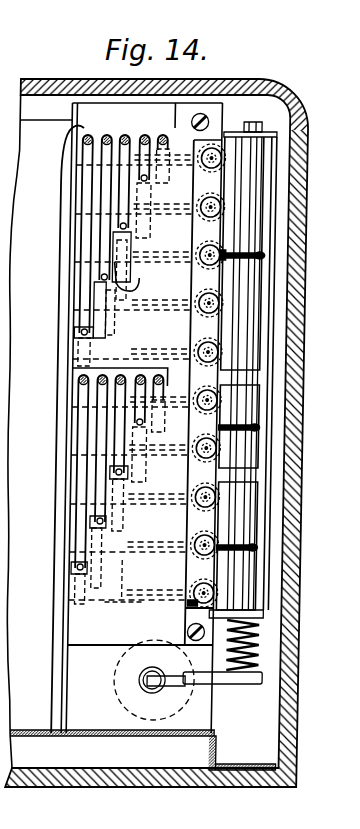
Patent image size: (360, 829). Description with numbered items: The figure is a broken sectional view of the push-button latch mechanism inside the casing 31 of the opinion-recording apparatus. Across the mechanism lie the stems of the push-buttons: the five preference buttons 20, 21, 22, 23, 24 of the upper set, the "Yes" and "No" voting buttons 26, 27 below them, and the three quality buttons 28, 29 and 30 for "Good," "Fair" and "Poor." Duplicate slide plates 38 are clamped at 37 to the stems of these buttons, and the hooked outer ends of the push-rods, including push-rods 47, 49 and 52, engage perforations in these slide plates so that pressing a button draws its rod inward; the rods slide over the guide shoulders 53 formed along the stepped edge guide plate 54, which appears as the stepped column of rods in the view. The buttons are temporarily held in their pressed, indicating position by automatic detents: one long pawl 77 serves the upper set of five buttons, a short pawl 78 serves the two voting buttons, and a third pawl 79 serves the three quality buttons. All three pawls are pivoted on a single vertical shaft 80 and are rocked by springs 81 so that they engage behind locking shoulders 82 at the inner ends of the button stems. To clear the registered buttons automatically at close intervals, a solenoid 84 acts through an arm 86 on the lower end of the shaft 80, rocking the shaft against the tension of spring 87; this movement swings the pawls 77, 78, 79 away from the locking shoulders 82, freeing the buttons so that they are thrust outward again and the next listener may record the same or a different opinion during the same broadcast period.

The push-button 20 is at (205, 164).
The push-button 21 is at (203, 211).
The push-button 22 is at (204, 261).
The push-button 23 is at (204, 309).
The push-button 24 is at (224, 349).
The voting button 26 is at (222, 395).
The voting button 27 is at (219, 459).
The opinion expressing button 28 is at (231, 497).
The opinion expressing button 29 is at (226, 585).
The opinion expressing button 30 is at (224, 600).
The casing 31 is at (297, 102).
The clamp 37 is at (176, 543).
The slide plate 38 is at (120, 600).
The push-rod 47 is at (70, 127).
The push-rod 49 is at (160, 136).
The push-rod 52 is at (83, 374).
The guide shoulder 53 is at (136, 278).
The stepped edge guide plate 54 is at (183, 124).
The long pawl 77 is at (230, 183).
The short pawl 78 is at (235, 413).
The pawl 79 is at (243, 508).
The vertical shaft 80 is at (255, 122).
The spring 81 is at (263, 256).
The locking shoulder 82 is at (226, 257).
The solenoid 84 is at (125, 707).
The arm 86 is at (226, 690).
The spring 87 is at (258, 655).